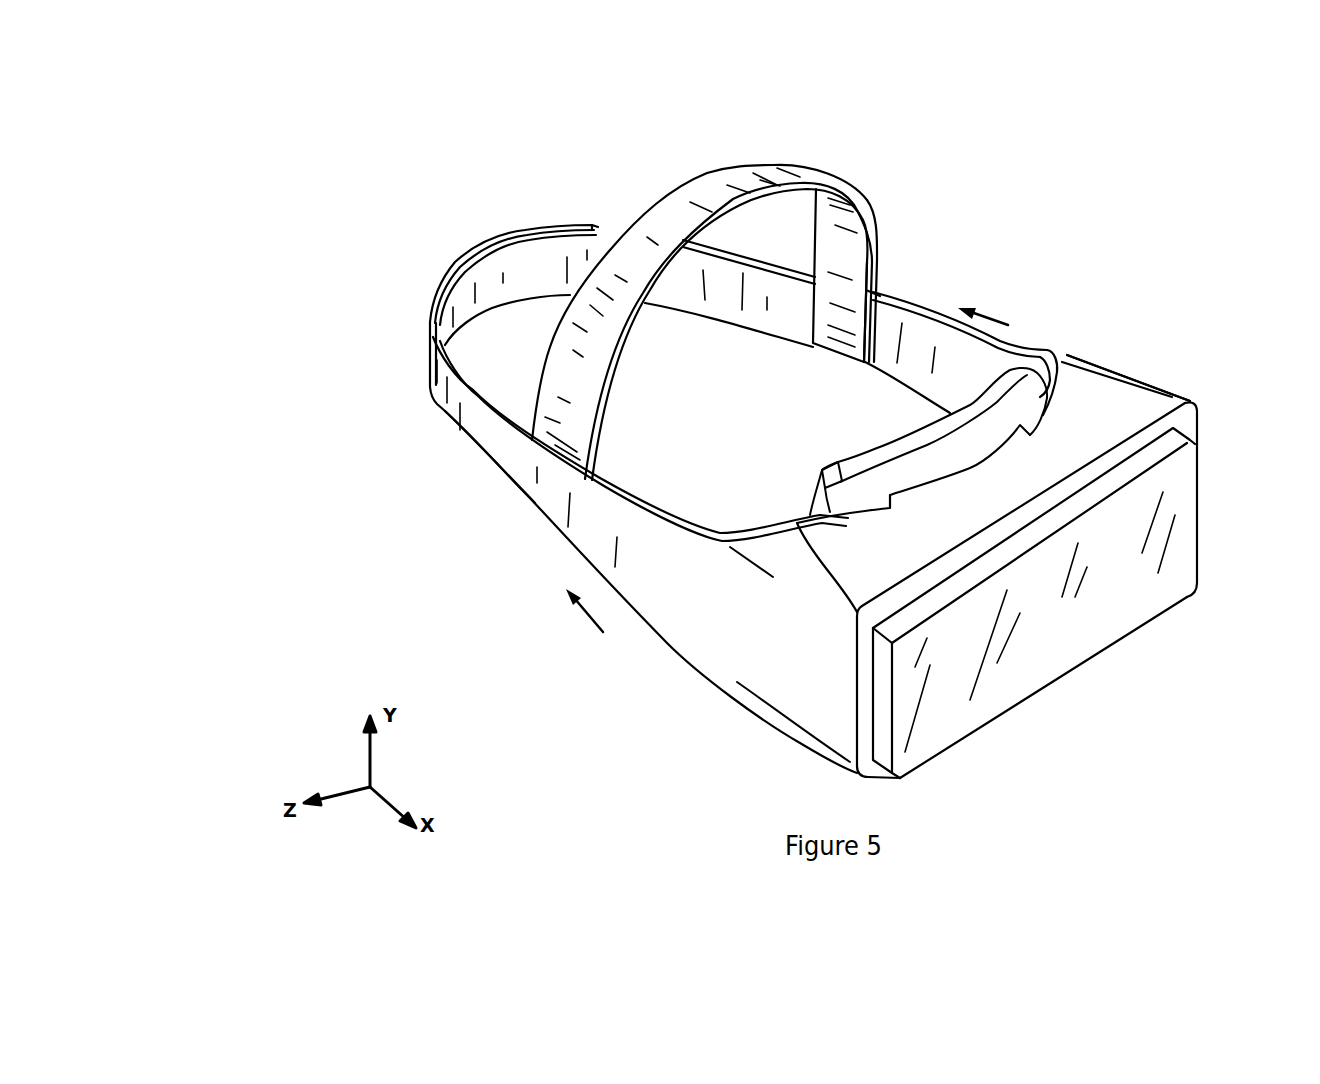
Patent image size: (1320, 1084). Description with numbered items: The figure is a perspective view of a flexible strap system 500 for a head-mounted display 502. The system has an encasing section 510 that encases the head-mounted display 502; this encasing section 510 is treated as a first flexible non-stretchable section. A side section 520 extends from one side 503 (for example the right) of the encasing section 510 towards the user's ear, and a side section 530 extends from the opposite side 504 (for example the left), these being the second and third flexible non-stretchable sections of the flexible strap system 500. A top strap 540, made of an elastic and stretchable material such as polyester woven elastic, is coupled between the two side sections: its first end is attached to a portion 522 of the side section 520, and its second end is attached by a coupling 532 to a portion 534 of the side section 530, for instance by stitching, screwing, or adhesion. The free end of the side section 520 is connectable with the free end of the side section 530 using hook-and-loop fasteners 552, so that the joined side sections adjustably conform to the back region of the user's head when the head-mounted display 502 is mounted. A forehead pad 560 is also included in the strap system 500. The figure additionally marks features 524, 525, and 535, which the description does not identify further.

The flexible strap system 500 is at (356, 132).
The head-mounted display 502 is at (1193, 498).
The side of the encasing section 503 is at (782, 694).
The side of the encasing section 504 is at (1146, 362).
The encasing section 510 is at (1173, 385).
The side section 520 is at (637, 604).
The portion of the side section 522 is at (542, 498).
The upper rim of band 524 is at (613, 475).
The direction of adjustment 525 is at (573, 597).
The side section 530 is at (913, 307).
The coupling 532 is at (884, 279).
The portion of the side section 534 is at (803, 328).
The direction of adjustment 535 is at (973, 302).
The top strap 540 is at (732, 189).
The hook-and-loop fasteners 552 is at (524, 220).
The forehead pad 560 is at (1040, 383).